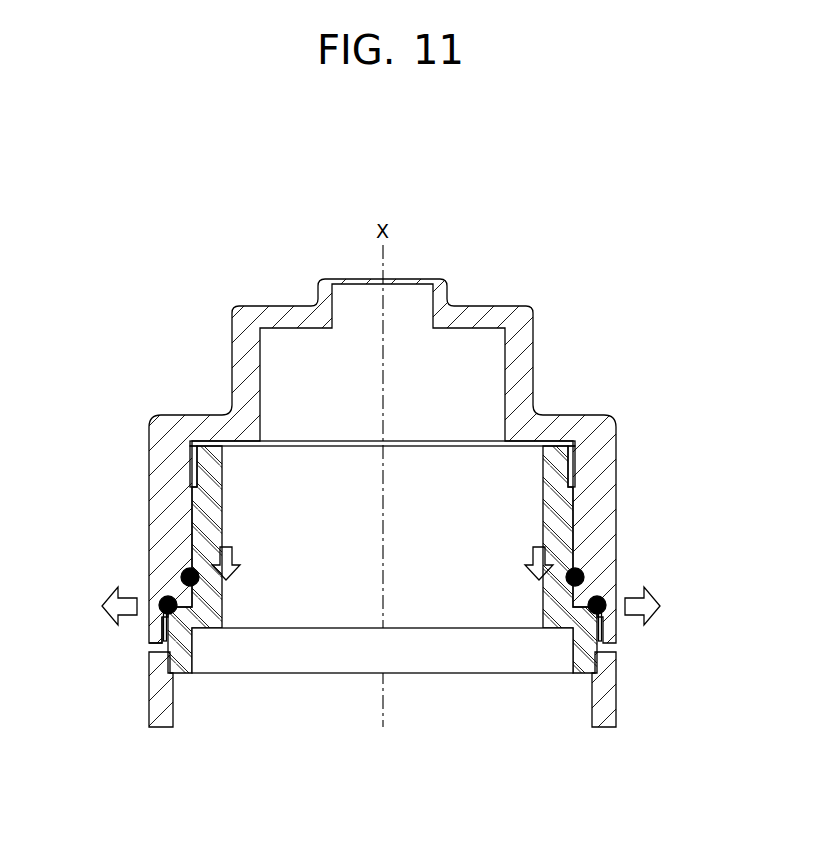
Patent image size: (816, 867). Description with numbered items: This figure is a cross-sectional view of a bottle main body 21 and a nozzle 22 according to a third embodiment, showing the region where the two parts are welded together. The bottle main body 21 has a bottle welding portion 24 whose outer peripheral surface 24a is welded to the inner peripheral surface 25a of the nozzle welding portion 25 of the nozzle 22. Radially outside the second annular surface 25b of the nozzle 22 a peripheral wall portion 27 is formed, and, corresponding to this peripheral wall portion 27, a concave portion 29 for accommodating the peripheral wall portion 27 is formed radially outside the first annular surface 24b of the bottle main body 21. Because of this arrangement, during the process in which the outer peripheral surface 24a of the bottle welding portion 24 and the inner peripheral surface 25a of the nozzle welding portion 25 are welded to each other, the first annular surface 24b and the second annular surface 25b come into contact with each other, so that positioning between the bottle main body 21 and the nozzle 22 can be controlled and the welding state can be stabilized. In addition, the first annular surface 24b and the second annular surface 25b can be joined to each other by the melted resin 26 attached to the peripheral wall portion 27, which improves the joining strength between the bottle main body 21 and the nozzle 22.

The bottle main body 21 is at (118, 706).
The nozzle 22 is at (589, 341).
The bottle welding portion 24 is at (195, 518).
The outer peripheral surface 24a is at (192, 535).
The first annular surface 24b is at (583, 600).
The nozzle welding portion 25 is at (607, 495).
The inner peripheral surface 25a is at (573, 523).
The second annular surface 25b is at (558, 630).
The melted resin 26 is at (158, 592).
The peripheral wall portion 27 is at (610, 628).
The concave portion 29 is at (155, 637).